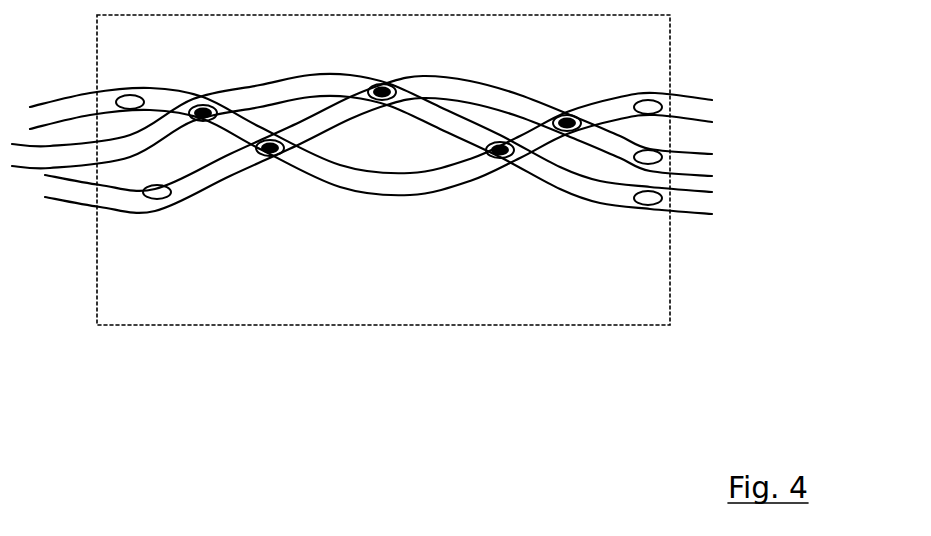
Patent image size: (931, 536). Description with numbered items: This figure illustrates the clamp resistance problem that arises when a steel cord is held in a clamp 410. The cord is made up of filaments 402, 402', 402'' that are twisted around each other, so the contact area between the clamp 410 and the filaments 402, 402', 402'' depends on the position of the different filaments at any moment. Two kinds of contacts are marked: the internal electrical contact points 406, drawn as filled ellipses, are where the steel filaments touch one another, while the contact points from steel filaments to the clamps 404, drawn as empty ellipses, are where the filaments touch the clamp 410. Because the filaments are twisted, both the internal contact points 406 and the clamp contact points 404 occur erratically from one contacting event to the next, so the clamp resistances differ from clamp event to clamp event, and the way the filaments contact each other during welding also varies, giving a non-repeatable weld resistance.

The filament 402 is at (371, 171).
The filament 402' is at (362, 119).
The filament 402'' is at (378, 117).
The contact points from steel filaments to the clamps 404 is at (389, 180).
The internal electrical contact points 406 is at (385, 160).
The clamp 410 is at (185, 304).